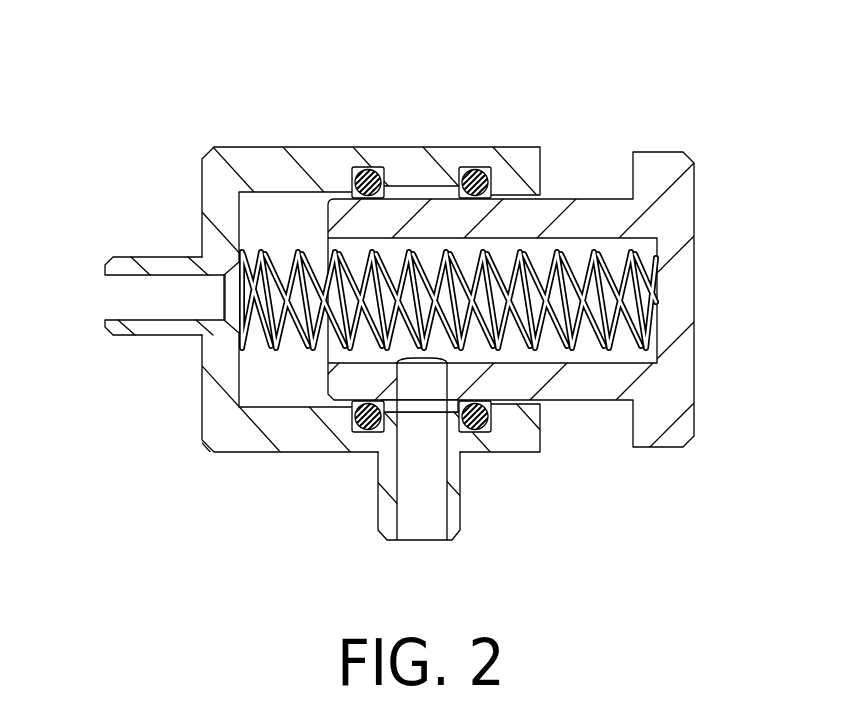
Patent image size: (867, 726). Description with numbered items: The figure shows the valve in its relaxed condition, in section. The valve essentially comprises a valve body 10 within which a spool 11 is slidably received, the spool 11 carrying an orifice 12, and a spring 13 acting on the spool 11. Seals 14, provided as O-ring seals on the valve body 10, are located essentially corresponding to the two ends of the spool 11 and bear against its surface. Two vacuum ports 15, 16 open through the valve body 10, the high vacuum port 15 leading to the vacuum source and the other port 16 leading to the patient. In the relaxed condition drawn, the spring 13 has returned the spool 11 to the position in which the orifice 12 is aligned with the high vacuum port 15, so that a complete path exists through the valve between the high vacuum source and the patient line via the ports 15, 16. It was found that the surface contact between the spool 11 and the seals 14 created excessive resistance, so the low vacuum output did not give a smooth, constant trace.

The valve body 10 is at (233, 147).
The spool 11 is at (697, 243).
The orifice 12 is at (427, 383).
The spring 13 is at (558, 257).
The seals 14 is at (350, 407).
The vacuum port 15 is at (415, 515).
The vacuum port 16 is at (108, 296).